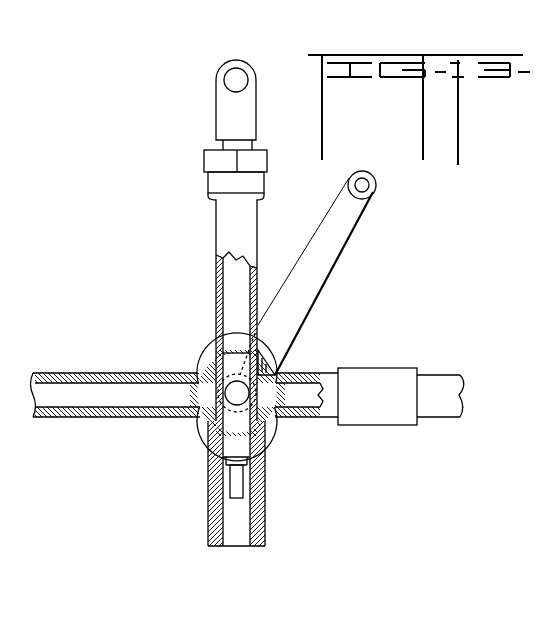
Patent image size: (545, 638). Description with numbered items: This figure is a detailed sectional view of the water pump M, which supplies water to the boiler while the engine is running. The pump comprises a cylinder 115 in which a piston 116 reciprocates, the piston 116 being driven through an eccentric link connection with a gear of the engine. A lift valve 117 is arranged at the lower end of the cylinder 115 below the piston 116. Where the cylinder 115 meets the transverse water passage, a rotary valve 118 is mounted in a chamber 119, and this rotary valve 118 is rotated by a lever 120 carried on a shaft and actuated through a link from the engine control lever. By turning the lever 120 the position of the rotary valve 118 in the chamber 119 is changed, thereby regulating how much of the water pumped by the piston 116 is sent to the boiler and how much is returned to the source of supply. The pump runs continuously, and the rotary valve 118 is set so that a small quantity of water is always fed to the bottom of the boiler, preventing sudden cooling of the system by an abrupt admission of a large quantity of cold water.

The cylinder 115 is at (237, 296).
The piston 116 is at (235, 147).
The lift valve 117 is at (235, 478).
The rotary valve 118 is at (207, 405).
The chamber 119 is at (277, 370).
The lever 120 is at (337, 238).
The water pump M is at (230, 211).